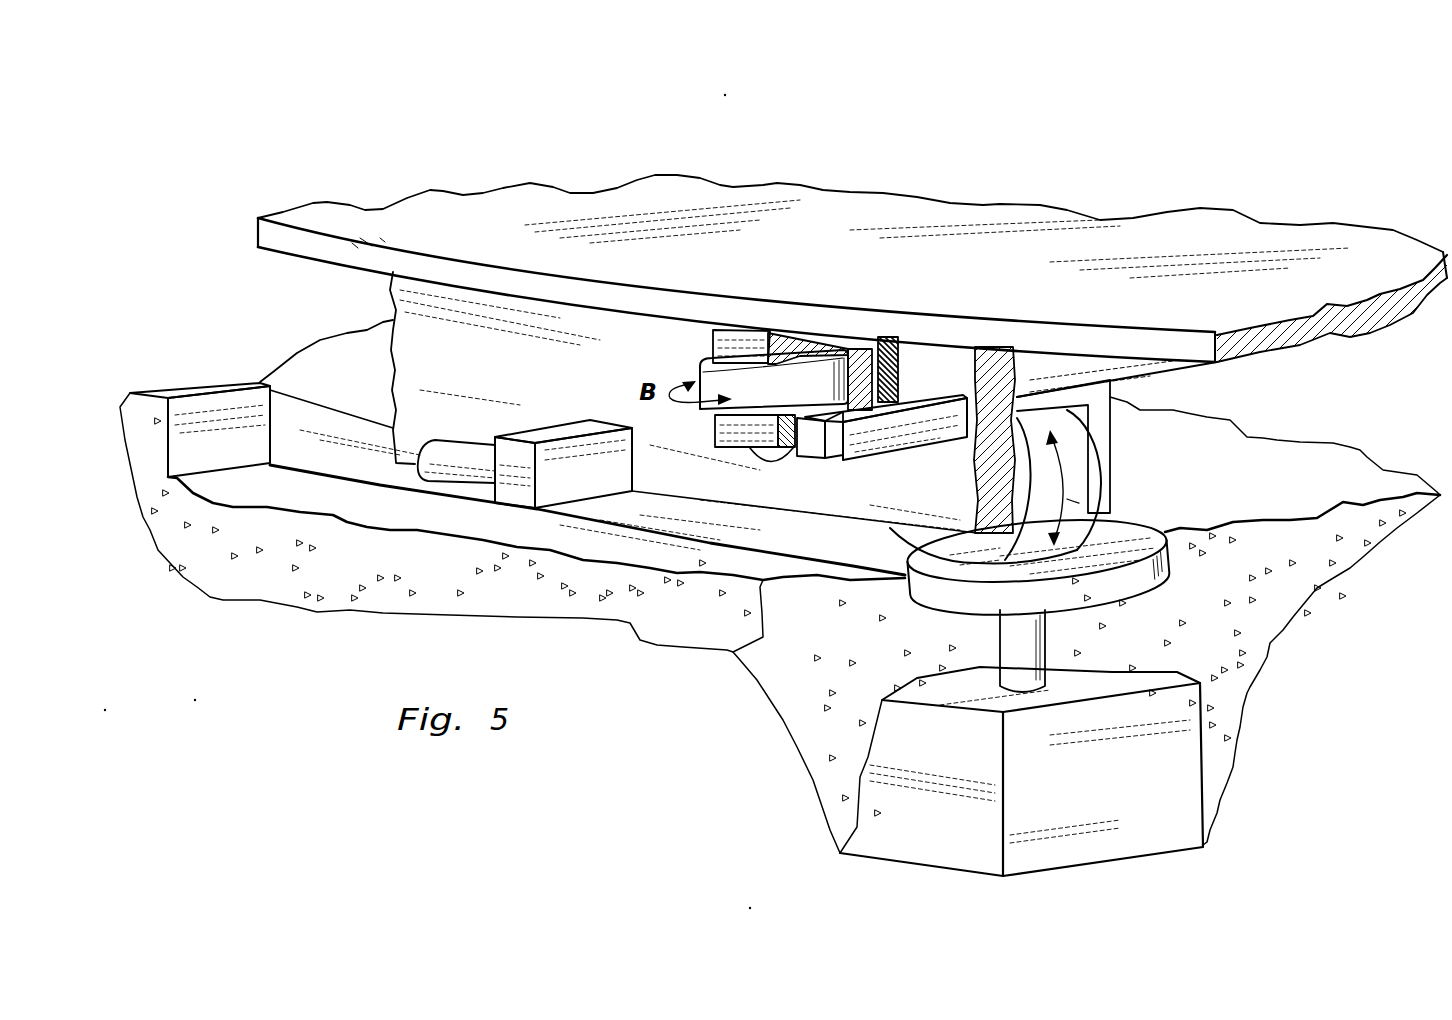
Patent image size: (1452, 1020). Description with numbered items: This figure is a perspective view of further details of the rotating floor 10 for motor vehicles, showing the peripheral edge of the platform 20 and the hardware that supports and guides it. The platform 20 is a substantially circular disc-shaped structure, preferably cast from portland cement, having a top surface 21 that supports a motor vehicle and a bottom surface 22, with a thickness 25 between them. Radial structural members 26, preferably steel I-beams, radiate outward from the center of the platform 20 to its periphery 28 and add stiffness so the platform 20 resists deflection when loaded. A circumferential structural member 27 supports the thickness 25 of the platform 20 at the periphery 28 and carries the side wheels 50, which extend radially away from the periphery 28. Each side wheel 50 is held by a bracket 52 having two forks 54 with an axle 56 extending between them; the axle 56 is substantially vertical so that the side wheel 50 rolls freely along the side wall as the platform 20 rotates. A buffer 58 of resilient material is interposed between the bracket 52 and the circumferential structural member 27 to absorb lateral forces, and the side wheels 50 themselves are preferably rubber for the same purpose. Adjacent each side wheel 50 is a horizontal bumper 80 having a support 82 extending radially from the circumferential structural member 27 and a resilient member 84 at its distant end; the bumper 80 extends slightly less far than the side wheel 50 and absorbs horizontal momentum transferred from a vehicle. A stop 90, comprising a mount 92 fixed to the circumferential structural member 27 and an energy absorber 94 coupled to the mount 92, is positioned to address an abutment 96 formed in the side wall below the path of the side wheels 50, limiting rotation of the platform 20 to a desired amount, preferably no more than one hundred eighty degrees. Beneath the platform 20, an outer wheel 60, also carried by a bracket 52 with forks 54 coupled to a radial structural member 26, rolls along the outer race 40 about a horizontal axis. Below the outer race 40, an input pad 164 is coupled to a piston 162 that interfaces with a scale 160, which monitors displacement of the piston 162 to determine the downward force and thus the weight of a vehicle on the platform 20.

The rotating floor 10 is at (310, 134).
The platform 20 is at (503, 185).
The top surface 21 is at (820, 251).
The bottom surface 22 is at (287, 256).
The thickness 25 is at (1312, 342).
The radial structural members 26 is at (1113, 368).
The circumferential structural member 27 is at (540, 378).
The periphery 28 is at (312, 243).
The outer race 40 is at (377, 473).
The side wheels 50 is at (697, 370).
The bracket 52 is at (853, 347).
The forks 54 is at (795, 347).
The axle 56 is at (747, 330).
The buffer 58 is at (899, 372).
The outer wheels 60 is at (1087, 472).
The horizontal bumper 80 is at (900, 438).
The support 82 is at (860, 448).
The resilient member 84 is at (813, 443).
The stop 90 is at (540, 453).
The mount 92 is at (560, 485).
The energy absorber 94 is at (438, 466).
The abutment 96 is at (194, 456).
The scale 160 is at (1078, 800).
The piston 162 is at (1045, 645).
The pad 164 is at (1125, 543).